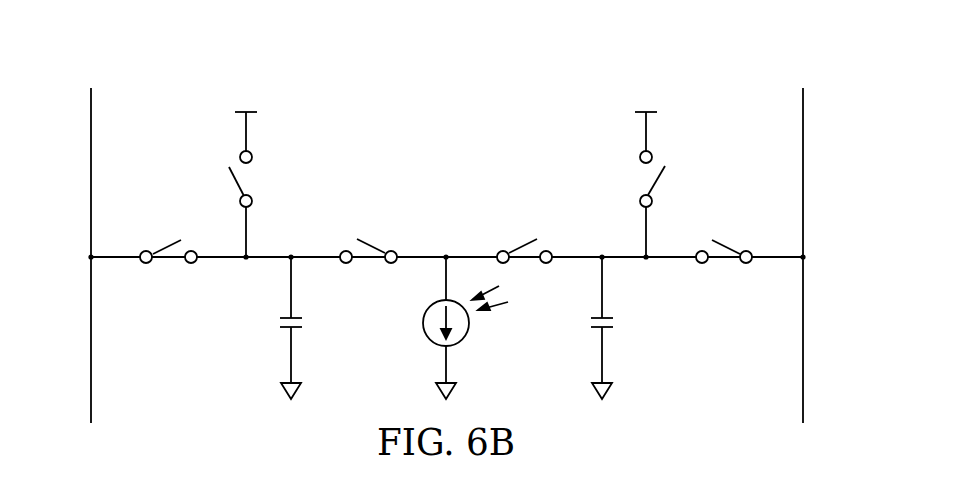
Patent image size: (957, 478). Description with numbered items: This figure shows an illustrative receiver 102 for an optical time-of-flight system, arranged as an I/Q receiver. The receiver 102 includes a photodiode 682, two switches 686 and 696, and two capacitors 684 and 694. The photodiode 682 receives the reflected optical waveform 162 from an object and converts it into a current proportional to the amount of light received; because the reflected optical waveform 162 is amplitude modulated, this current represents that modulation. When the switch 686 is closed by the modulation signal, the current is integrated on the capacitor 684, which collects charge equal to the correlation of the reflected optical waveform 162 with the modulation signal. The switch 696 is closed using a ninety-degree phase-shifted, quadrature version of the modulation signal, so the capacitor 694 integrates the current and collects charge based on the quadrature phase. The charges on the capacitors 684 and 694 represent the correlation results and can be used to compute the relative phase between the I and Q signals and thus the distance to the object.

The receiver 102 is at (548, 99).
The reflected optical waveform 162 is at (498, 306).
The photodiode 682 is at (423, 321).
The capacitor 684 is at (277, 320).
The switch 686 is at (373, 245).
The capacitor 694 is at (614, 323).
The switch 696 is at (521, 245).